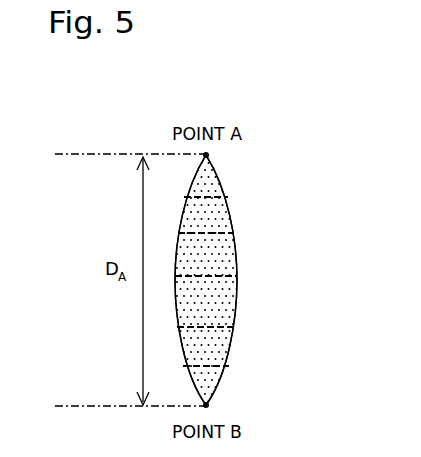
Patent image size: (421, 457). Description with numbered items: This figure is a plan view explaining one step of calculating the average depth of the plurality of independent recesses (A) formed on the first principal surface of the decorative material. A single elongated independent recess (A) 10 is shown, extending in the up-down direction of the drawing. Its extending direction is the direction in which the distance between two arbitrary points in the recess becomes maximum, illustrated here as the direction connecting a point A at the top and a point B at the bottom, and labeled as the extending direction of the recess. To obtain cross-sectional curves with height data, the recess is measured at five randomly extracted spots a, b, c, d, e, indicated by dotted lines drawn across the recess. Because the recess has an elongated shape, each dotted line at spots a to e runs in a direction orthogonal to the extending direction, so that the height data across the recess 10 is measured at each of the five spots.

The independent recess (A) 10 is at (240, 108).
The measurement spot a is at (230, 193).
The measurement spot b is at (233, 228).
The measurement spot c is at (236, 276).
The measurement spot d is at (235, 323).
The measurement spot e is at (231, 360).